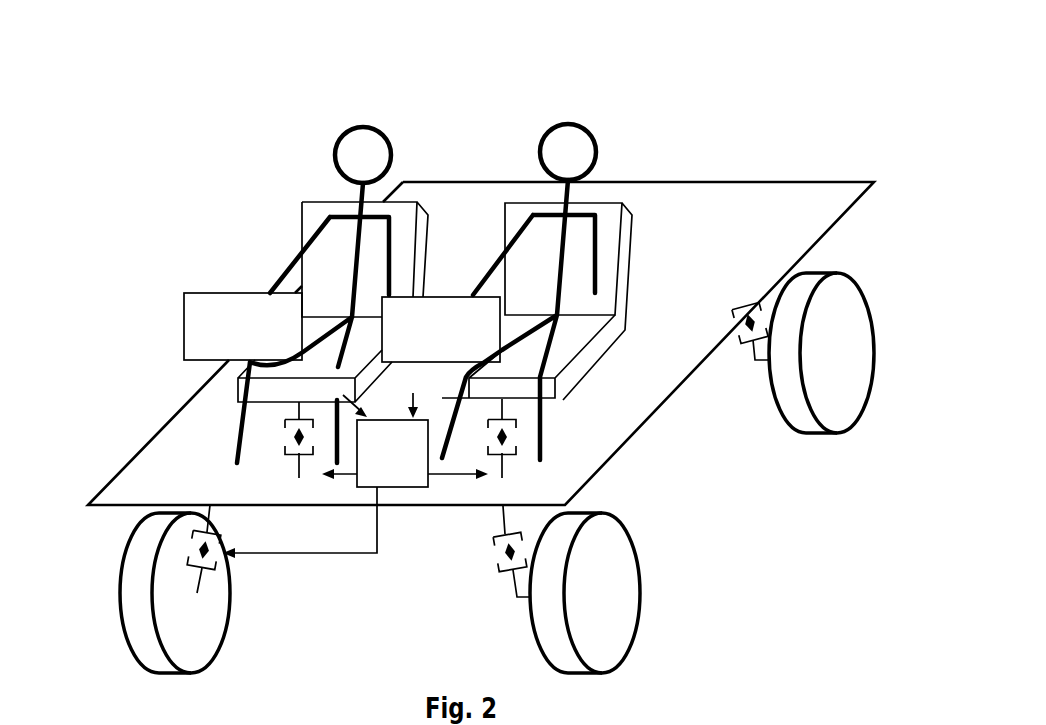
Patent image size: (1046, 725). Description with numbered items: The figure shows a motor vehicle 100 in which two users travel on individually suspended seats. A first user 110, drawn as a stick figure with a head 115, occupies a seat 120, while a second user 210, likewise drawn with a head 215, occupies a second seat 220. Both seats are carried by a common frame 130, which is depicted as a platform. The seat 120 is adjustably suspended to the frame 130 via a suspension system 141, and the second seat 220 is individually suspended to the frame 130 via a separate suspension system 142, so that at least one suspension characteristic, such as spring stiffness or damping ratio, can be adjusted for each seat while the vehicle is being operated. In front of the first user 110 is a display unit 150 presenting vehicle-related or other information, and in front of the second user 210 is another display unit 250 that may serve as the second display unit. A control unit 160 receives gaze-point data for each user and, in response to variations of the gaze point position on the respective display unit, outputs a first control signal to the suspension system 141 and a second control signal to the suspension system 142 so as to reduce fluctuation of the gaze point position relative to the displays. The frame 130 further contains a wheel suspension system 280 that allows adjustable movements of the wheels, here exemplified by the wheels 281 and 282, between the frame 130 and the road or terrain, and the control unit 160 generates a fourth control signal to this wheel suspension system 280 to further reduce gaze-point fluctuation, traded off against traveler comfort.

The motor vehicle 100 is at (481, 346).
The first user 110 is at (580, 251).
The head of first occupant 115 is at (582, 147).
The seat 120 is at (628, 243).
The frame 130 is at (740, 202).
The suspension system 141 is at (517, 437).
The suspension system 142 is at (283, 439).
The display unit 150 is at (460, 327).
The control unit 160 is at (393, 487).
The second user 210 is at (350, 258).
The head of second occupant 215 is at (365, 147).
The second seat 220 is at (312, 215).
The display unit 250 is at (227, 320).
The wheel suspension system 280 is at (228, 597).
The wheel 281 is at (217, 650).
The wheel 282 is at (637, 615).